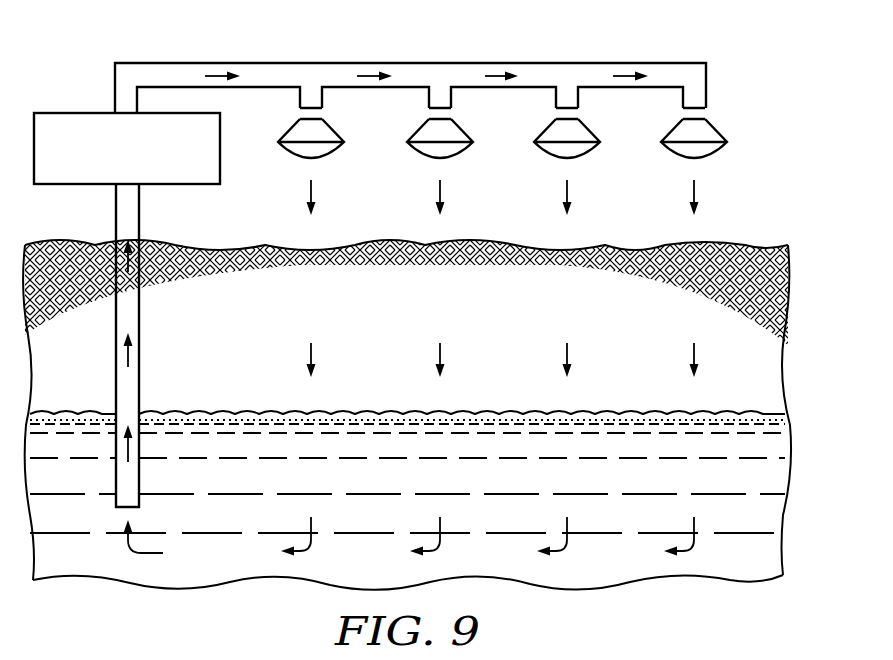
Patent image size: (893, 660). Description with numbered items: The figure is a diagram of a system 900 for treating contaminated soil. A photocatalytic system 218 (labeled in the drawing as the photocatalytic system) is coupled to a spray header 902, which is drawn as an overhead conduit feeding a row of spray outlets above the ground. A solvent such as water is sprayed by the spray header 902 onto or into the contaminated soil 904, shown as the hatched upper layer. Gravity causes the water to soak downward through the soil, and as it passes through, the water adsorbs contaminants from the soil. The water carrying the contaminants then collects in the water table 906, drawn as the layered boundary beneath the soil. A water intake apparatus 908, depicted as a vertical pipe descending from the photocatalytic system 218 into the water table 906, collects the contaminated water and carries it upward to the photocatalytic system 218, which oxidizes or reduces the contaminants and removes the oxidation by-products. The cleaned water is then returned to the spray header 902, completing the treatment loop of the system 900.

The system for treating contaminated soil 900 is at (760, 98).
The photocatalytic system 218 is at (72, 112).
The spray header 902 is at (498, 63).
The contaminated soil 904 is at (788, 290).
The water table 906 is at (236, 413).
The water intake apparatus 908 is at (115, 205).